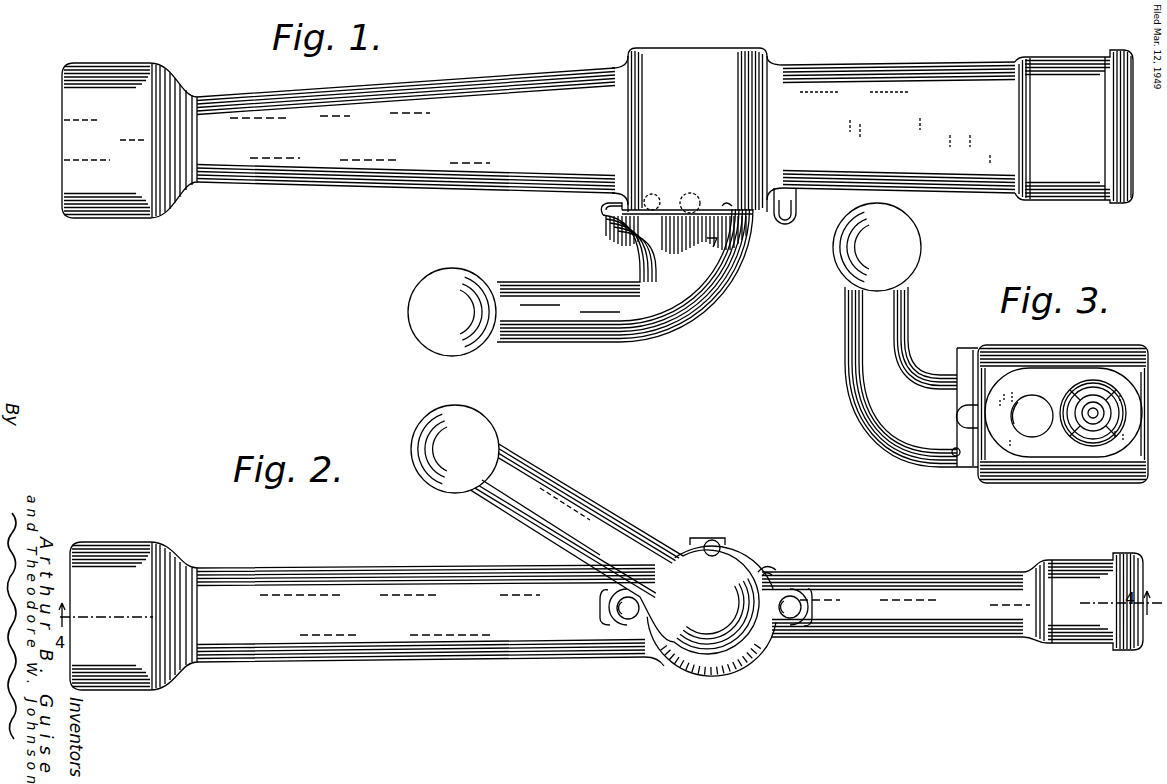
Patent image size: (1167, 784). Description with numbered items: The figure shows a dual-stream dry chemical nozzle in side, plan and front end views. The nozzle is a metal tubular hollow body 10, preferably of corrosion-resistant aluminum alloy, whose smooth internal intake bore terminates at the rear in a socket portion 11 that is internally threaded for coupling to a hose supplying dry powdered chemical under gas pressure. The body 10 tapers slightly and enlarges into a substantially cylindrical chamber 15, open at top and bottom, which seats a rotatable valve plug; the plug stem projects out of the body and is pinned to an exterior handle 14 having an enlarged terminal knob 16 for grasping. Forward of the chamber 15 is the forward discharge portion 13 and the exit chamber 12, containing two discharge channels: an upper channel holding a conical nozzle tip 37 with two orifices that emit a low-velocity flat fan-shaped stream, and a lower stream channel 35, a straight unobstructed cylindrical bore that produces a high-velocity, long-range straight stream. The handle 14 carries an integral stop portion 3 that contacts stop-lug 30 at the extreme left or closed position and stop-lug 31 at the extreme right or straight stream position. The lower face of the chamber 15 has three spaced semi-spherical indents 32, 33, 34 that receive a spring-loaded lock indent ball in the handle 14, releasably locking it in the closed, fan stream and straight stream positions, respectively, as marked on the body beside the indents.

In FIG. 3, the stop portion 3 is at (958, 352).
In FIG. 1, the tubular hollow body 10 is at (403, 95).
In FIG. 2, the tubular hollow body 10 is at (372, 590).
In FIG. 1, the socket portion 11 is at (102, 92).
In FIG. 2, the socket portion 11 is at (138, 568).
In FIG. 1, the exit chamber 12 is at (1073, 70).
In FIG. 2, the exit chamber 12 is at (1090, 560).
In FIG. 1, the forward discharge portion 13 is at (895, 82).
In FIG. 2, the forward discharge portion 13 is at (890, 583).
In FIG. 1, the handle 14 is at (633, 323).
In FIG. 2, the handle 14 is at (567, 487).
In FIG. 3, the handle 14 is at (853, 362).
In FIG. 1, the cylindrical chamber 15 is at (706, 67).
In FIG. 1, the terminal knob 16 is at (458, 278).
In FIG. 2, the terminal knob 16 is at (432, 427).
In FIG. 3, the terminal knob 16 is at (905, 262).
In FIG. 1, the stop-lug 30 is at (603, 208).
In FIG. 2, the stop-lug 30 is at (620, 620).
In FIG. 1, the stop-lug 31 is at (793, 228).
In FIG. 2, the stop-lug 31 is at (797, 620).
In FIG. 1, the indent 32 is at (647, 196).
In FIG. 1, the indent 33 is at (687, 194).
In FIG. 2, the indent 33 is at (712, 540).
In FIG. 1, the indent 34 is at (727, 203).
In FIG. 2, the indent 34 is at (762, 560).
In FIG. 3, the lower stream channel 35 is at (1025, 422).
In FIG. 3, the nozzle tip 37 is at (1067, 400).